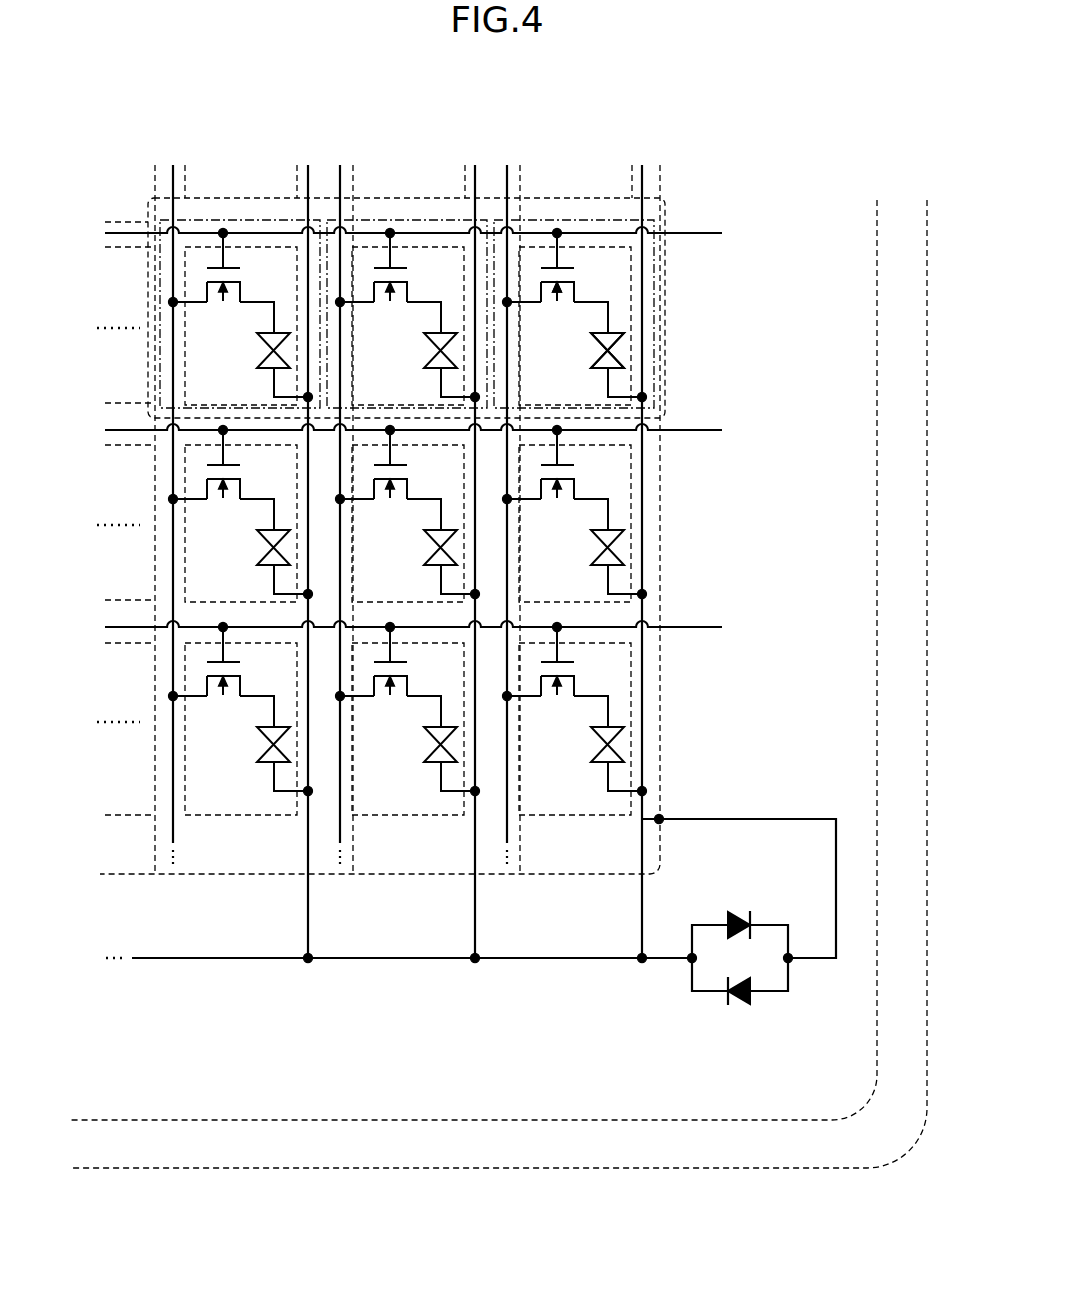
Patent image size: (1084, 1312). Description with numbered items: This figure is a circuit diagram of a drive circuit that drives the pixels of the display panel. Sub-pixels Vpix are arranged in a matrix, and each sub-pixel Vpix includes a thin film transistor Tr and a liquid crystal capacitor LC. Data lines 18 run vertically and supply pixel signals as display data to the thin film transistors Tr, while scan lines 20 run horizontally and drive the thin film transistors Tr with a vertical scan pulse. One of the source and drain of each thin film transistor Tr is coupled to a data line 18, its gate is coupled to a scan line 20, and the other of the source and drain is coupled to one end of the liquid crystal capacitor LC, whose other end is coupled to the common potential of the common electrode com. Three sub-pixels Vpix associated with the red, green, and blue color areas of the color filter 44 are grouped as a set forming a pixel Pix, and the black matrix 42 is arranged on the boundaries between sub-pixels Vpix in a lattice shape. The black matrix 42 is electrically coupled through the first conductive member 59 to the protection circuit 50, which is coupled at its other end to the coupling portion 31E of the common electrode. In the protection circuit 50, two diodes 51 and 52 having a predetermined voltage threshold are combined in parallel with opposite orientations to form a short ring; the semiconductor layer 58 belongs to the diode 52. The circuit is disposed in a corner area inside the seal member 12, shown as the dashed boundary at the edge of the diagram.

The seal member 12 is at (857, 1140).
The data line 18 is at (173, 838).
The scan line 20 is at (150, 233).
The black matrix 42 is at (520, 190).
The color filter 44 is at (598, 258).
The protection circuit 50 is at (743, 984).
The diode 51 is at (745, 897).
The diode 52 is at (728, 1016).
The semiconductor layer 58 is at (668, 956).
The first conductive member 59 is at (782, 819).
The coupling portion 31E is at (632, 970).
The thin film transistor Tr is at (550, 320).
The liquid crystal capacitor LC is at (597, 356).
The pixel Pix is at (440, 197).
The sub-pixel Vpix is at (268, 215).
The common electrode com is at (308, 843).